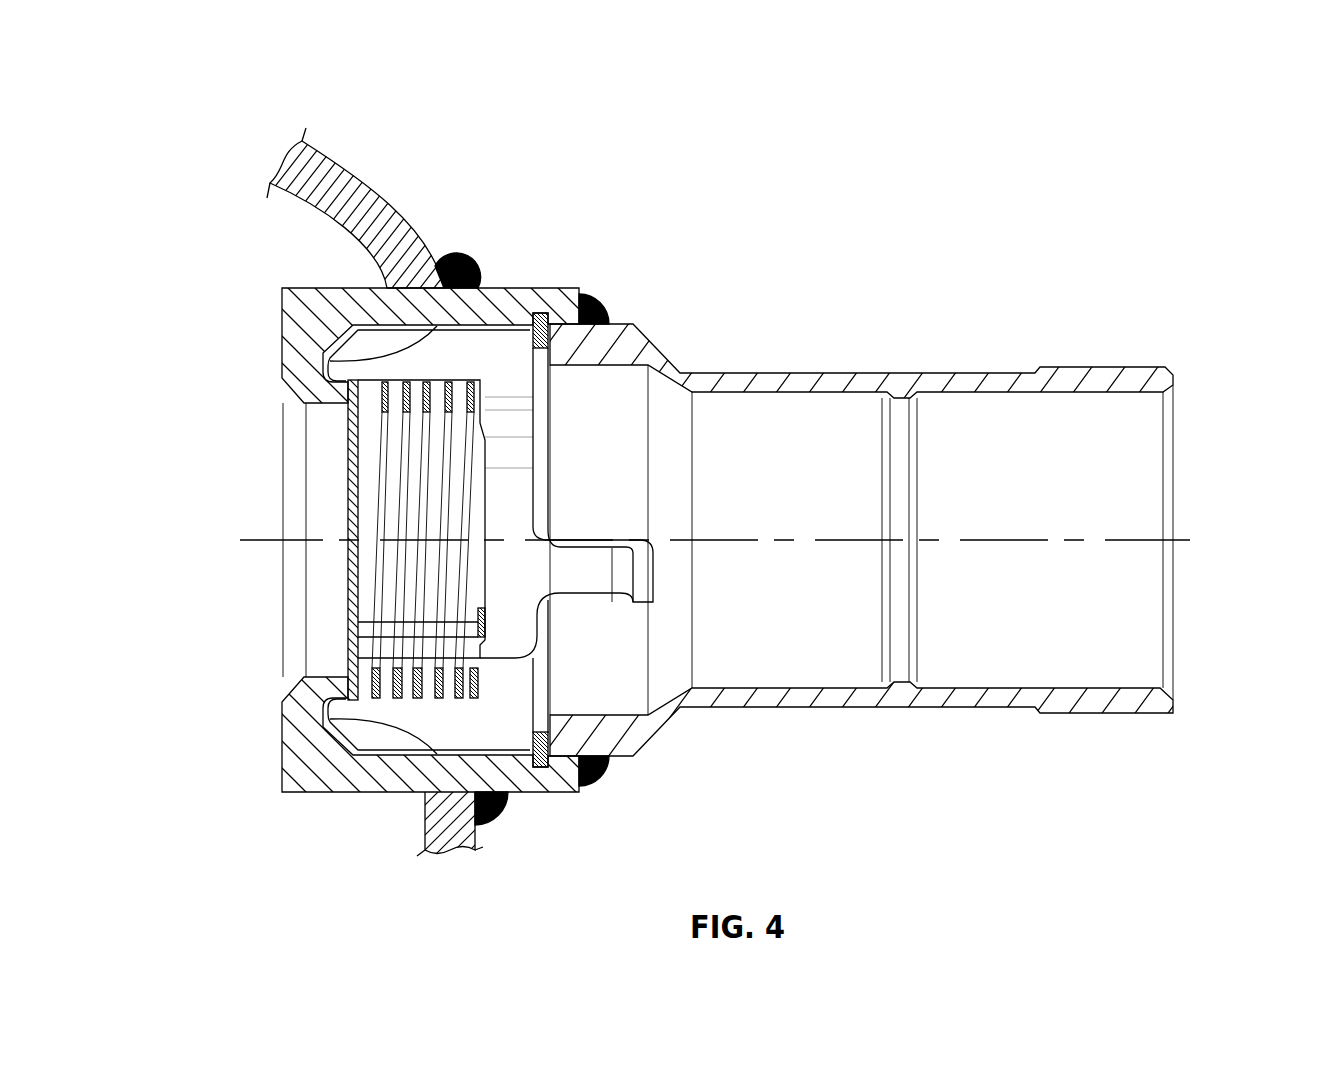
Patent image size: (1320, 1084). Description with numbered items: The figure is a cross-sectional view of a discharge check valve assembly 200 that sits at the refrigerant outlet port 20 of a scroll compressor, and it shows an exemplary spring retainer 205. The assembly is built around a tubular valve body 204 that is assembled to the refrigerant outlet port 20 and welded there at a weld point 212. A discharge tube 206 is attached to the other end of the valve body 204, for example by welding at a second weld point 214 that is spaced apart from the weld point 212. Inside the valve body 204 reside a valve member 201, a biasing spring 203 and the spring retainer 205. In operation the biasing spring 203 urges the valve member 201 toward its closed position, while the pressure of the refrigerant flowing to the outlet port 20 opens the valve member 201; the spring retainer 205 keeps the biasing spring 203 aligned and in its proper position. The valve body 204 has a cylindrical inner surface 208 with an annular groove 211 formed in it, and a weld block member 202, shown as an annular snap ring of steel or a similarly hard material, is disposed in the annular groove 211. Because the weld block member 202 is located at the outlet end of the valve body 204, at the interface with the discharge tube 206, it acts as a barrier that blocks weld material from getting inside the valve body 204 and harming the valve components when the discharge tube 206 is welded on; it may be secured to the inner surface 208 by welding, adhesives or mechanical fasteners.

The refrigerant outlet port 20 is at (246, 401).
The discharge check valve assembly 200 is at (1178, 148).
The valve member 201 is at (347, 596).
The weld block member 202 is at (538, 352).
The biasing spring 203 is at (437, 698).
The valve body 204 is at (529, 300).
The spring retainer 205 is at (582, 577).
The discharge tube 206 is at (870, 375).
The cylindrical inner surface 208 is at (323, 357).
The annular groove 211 is at (541, 768).
The weld point 212 is at (462, 262).
The second weld point 214 is at (597, 300).